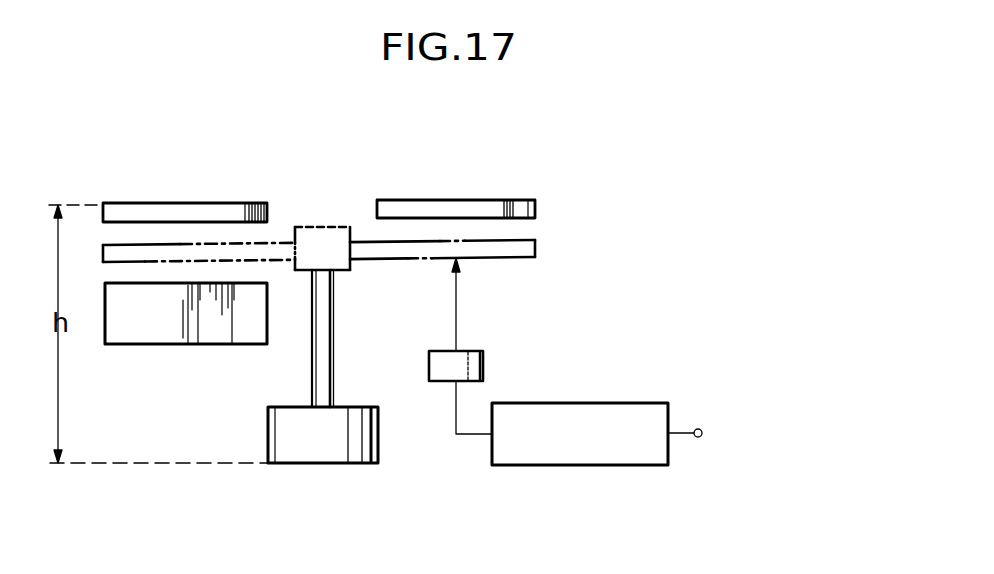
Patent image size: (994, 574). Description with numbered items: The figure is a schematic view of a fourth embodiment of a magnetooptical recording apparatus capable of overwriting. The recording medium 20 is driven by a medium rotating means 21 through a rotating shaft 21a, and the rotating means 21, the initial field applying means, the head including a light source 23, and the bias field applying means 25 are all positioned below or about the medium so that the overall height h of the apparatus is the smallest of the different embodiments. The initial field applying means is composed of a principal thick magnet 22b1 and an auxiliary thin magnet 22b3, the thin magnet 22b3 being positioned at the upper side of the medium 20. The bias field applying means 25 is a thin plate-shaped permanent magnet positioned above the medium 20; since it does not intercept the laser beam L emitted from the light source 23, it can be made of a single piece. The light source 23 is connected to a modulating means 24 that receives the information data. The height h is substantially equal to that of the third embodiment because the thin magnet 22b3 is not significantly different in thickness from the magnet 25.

The recording medium 20 is at (537, 248).
The medium rotating means 21 is at (350, 464).
The rotating shaft 21a is at (335, 340).
The principal thick magnet 22b1 is at (193, 344).
The auxiliary thin magnet 22b3 is at (207, 203).
The light source 23 is at (483, 373).
The modulating means 24 is at (583, 403).
The bias field applying means 25 is at (448, 200).